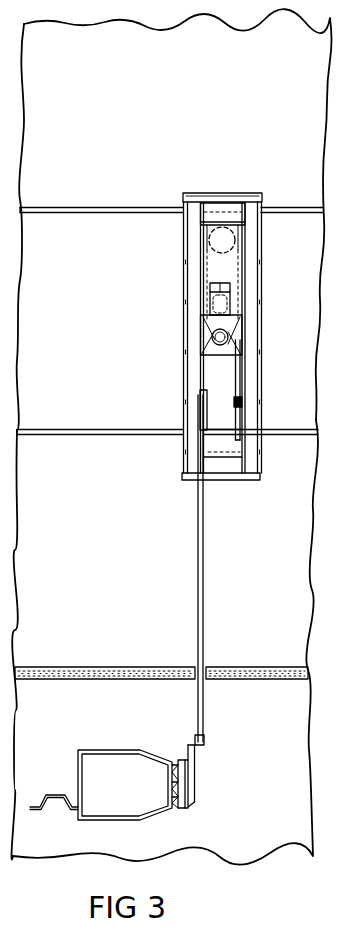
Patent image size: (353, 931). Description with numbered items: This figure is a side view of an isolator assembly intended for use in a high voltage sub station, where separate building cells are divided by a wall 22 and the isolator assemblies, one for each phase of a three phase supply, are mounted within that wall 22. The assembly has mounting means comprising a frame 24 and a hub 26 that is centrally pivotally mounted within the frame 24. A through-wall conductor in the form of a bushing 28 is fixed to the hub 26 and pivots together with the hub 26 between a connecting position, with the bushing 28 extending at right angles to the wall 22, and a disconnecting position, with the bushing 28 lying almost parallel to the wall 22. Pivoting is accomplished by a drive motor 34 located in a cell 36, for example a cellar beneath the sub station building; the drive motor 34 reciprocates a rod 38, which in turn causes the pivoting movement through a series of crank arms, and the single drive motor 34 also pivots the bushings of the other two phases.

The wall 22 is at (193, 144).
The frame 24 is at (271, 235).
The hub 26 is at (238, 326).
The bushing 28 is at (214, 333).
The drive motor 34 is at (117, 750).
The cell 36 is at (285, 810).
The rod 38 is at (201, 605).